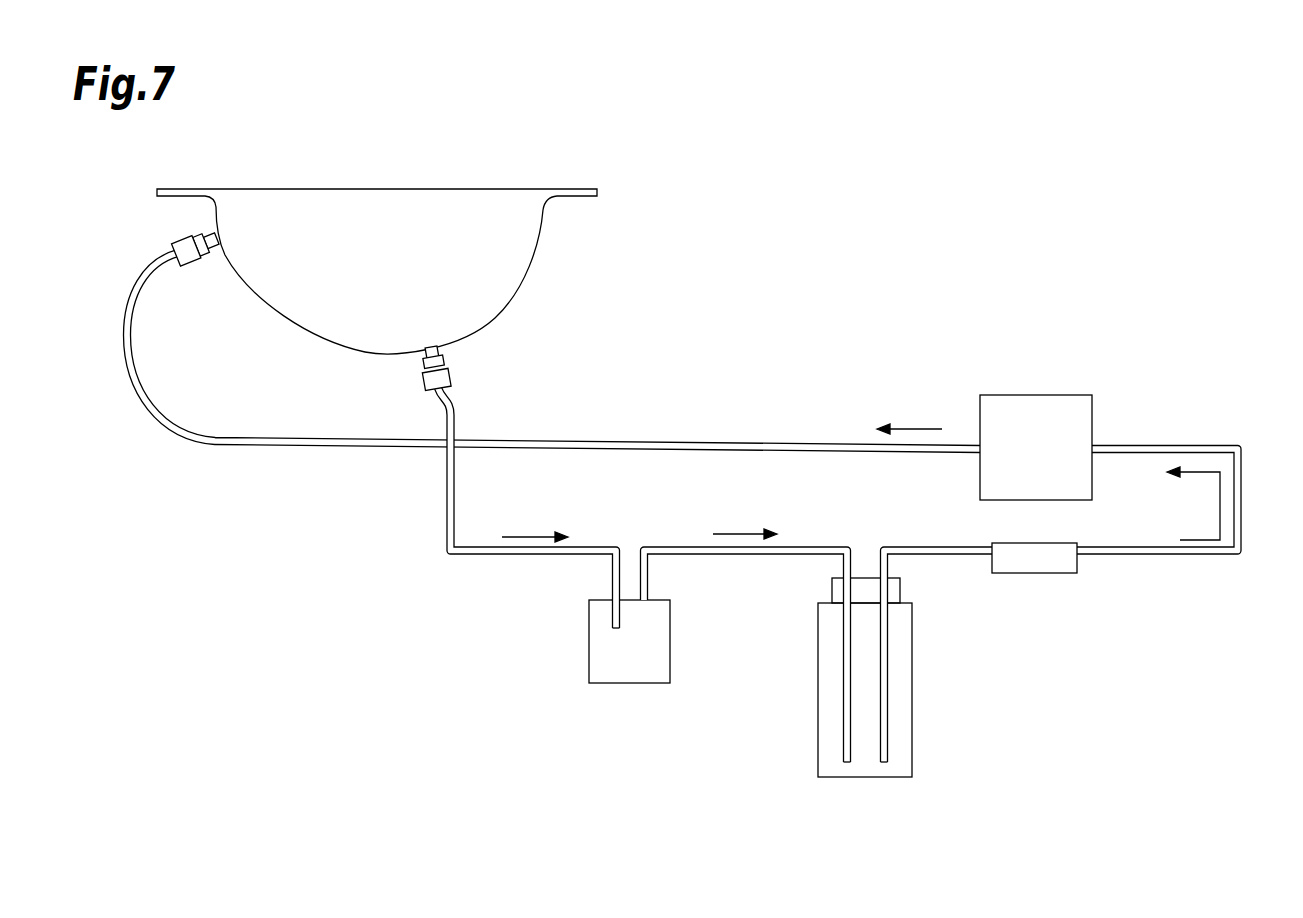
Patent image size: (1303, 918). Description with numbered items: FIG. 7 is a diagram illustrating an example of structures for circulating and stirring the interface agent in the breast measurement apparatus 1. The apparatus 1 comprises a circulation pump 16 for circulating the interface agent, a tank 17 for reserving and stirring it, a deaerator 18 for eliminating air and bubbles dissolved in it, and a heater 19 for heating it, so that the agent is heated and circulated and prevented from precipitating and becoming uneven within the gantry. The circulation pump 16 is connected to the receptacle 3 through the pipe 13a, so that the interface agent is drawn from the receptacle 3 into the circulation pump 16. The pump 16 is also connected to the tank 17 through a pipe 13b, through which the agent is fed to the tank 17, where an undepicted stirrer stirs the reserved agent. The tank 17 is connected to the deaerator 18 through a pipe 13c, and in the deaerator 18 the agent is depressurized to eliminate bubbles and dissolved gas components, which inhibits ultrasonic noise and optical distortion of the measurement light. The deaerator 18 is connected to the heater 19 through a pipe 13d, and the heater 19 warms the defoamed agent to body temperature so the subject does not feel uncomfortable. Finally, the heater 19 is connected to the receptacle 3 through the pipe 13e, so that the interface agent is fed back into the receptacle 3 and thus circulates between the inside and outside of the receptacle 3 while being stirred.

The breast measurement apparatus 1 is at (1205, 692).
The receptacle 3 is at (520, 279).
The pipe 13a is at (518, 558).
The pipe 13b is at (745, 558).
The pipe 13c is at (945, 563).
The pipe 13d is at (1153, 558).
The pipe 13e is at (808, 442).
The circulation pump 16 is at (670, 663).
The tank 17 is at (912, 720).
The deaerator 18 is at (1030, 573).
The heater 19 is at (1053, 395).